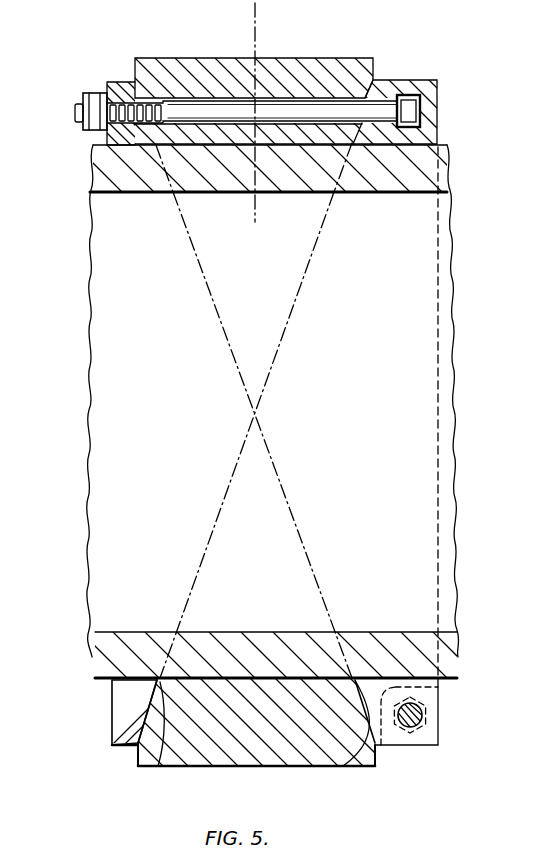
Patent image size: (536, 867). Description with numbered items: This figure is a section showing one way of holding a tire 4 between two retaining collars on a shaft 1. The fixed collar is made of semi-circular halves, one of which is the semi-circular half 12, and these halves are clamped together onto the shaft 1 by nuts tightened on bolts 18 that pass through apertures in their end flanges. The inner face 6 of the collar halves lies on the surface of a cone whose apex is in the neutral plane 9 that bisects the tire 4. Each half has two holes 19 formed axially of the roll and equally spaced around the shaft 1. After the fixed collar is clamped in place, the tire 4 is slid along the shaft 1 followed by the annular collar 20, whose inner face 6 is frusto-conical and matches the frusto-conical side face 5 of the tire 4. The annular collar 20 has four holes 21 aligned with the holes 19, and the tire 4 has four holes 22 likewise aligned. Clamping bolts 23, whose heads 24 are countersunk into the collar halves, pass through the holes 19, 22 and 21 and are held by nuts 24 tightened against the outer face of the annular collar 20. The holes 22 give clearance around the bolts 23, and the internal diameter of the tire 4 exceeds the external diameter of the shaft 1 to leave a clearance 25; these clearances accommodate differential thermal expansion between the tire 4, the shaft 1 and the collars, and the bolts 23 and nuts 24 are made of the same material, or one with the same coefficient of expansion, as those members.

The shaft 1 is at (158, 175).
The tire 4 is at (205, 68).
The frusto-conical side face 5 is at (160, 752).
The inner face 6 is at (137, 738).
The neutral plane 9 is at (257, 45).
The semi-circular half 12 is at (430, 740).
The bolt 18 is at (408, 722).
The hole 19 is at (397, 94).
The annular collar 20 is at (117, 697).
The hole 21 is at (114, 103).
The hole 22 is at (328, 99).
The clamping bolt 23 is at (378, 106).
The nut 24 is at (93, 130).
The clearance 25 is at (286, 140).